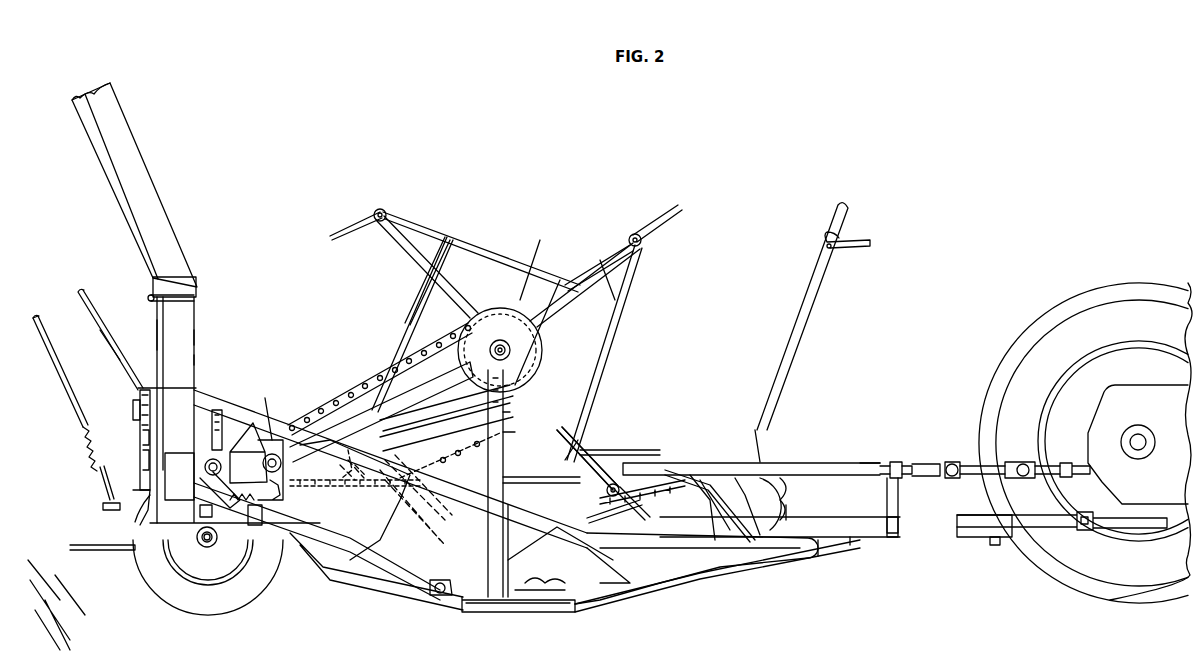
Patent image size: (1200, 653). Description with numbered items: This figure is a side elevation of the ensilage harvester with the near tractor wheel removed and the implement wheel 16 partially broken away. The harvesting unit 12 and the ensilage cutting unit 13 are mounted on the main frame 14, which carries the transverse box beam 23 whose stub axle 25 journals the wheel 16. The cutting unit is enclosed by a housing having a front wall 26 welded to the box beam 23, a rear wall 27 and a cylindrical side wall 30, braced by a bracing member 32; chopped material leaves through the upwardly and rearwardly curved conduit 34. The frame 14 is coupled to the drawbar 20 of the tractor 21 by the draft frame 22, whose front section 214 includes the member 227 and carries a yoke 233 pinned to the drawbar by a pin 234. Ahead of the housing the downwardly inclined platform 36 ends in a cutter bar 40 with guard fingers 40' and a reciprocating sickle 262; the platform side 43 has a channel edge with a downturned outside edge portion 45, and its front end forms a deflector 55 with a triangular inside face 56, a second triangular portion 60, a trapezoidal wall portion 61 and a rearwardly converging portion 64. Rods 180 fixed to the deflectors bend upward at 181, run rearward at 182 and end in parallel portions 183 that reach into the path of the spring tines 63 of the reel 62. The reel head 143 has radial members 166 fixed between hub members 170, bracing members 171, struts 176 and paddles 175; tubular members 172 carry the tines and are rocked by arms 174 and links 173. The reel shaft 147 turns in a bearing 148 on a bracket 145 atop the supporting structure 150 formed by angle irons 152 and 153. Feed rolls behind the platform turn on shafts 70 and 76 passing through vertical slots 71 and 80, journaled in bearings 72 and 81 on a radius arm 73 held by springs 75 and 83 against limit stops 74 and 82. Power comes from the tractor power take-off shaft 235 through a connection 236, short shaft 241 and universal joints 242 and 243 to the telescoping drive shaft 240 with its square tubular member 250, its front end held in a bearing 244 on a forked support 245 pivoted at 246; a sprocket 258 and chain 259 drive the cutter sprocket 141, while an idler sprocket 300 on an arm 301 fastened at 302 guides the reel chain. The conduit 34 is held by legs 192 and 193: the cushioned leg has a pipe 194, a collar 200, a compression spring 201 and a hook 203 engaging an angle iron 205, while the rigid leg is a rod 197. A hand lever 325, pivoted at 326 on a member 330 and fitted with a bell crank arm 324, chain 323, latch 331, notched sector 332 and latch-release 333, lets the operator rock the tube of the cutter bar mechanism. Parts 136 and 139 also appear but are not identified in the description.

The harvesting unit 12 is at (644, 419).
The ensilage cutting unit 13 is at (201, 362).
The main frame 14 is at (349, 597).
The wheel 16 is at (208, 608).
The drawbar 20 is at (1035, 527).
The tractor 21 is at (1087, 416).
The draft frame 22 is at (858, 566).
The box beam 23 is at (203, 533).
The stub axle 25 is at (202, 545).
The front wall 26 is at (195, 338).
The rear wall 27 is at (157, 332).
The cylindrical side wall 30 is at (195, 310).
The bracing member 32 is at (160, 510).
The conduit 34 is at (166, 176).
The platform 36 is at (392, 582).
The cutter bar 40 is at (519, 620).
The guard fingers 40' is at (717, 578).
The side 43 is at (511, 450).
The outside edge portion 45 is at (467, 485).
The deflectors 55 is at (690, 568).
The inside faces 56 is at (628, 583).
The second triangular portion 60 is at (575, 578).
The trapezoidal wall portions 61 is at (458, 532).
The reel 62 is at (532, 296).
The spring tines 63 is at (350, 490).
The converging portion 64 is at (352, 505).
The transverse shaft 70 is at (285, 468).
The vertical slots 71 is at (276, 452).
The bearings 72 is at (275, 440).
The radius arm 73 is at (244, 458).
The limit stop 74 is at (300, 518).
The spring 75 is at (256, 528).
The transverse shaft 76 is at (205, 480).
The vertical slots 80 is at (179, 463).
The bearings 81 is at (204, 466).
The limit stop 82 is at (200, 500).
The spring 83 is at (238, 520).
The clip 136 is at (133, 410).
The bracket 139 is at (150, 296).
The sprocket wheel 141 is at (140, 395).
The reel head 143 is at (589, 415).
The bracket 145 is at (516, 340).
The shaft 147 is at (503, 352).
The bearing 148 is at (495, 347).
The supporting structure 150 is at (525, 432).
The angle iron 152 is at (523, 412).
The angle iron 153 is at (440, 372).
The radial members 166 is at (455, 305).
The hub members 170 is at (503, 318).
The bracing member 171 is at (402, 330).
The tubular members 172 is at (607, 492).
The links 173 is at (425, 290).
The arm 174 is at (635, 467).
The paddles 175 is at (560, 478).
The struts 176 is at (372, 385).
The rods 180 is at (768, 560).
The bent portion 181 is at (818, 558).
The rearwardly extending portions 182 is at (786, 505).
The rear end portions 183 is at (680, 457).
The supporting leg 192 is at (46, 387).
The supporting leg 193 is at (95, 343).
The pipe 194 is at (38, 318).
The rod 197 is at (90, 308).
The collar 200 is at (100, 478).
The compression spring 201 is at (85, 455).
The hook 203 is at (110, 512).
The angle iron 205 is at (125, 548).
The front section 214 is at (864, 556).
The member 227 is at (856, 532).
The yoke 233 is at (968, 540).
The pin 234 is at (1000, 545).
The power take-off shaft 235 is at (1066, 460).
The connection 236 is at (1048, 478).
The telescoping drive shaft 240 is at (823, 457).
The short shaft 241 is at (990, 462).
The universal joint 242 is at (1028, 452).
The universal joint 243 is at (954, 452).
The bearing 244 is at (900, 462).
The support 245 is at (898, 490).
The transverse pivot 246 is at (898, 535).
The square tubular member 250 is at (790, 462).
The sprocket 258 is at (143, 460).
The chain 259 is at (143, 440).
The sickle member 262 is at (545, 578).
The idler sprocket 300 is at (420, 505).
The arm 301 is at (415, 535).
The fastening point 302 is at (448, 580).
The chain 323 is at (665, 485).
The bell crank arm 324 is at (718, 480).
The hand lever 325 is at (790, 360).
The pivot 326 is at (715, 520).
The member 330 is at (762, 525).
The releasable latch 331 is at (755, 435).
The notched sector 332 is at (784, 490).
The latch-release 333 is at (850, 245).